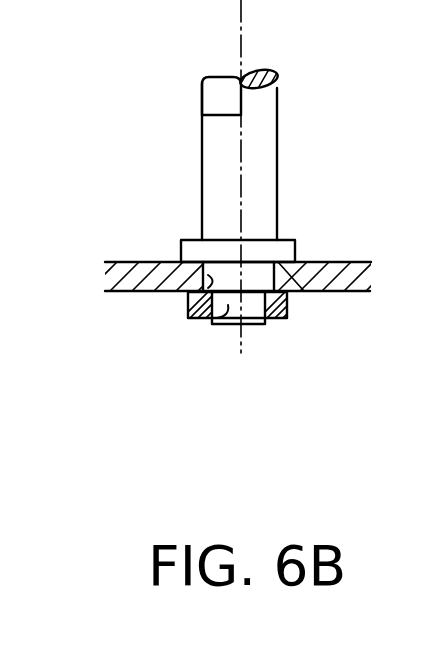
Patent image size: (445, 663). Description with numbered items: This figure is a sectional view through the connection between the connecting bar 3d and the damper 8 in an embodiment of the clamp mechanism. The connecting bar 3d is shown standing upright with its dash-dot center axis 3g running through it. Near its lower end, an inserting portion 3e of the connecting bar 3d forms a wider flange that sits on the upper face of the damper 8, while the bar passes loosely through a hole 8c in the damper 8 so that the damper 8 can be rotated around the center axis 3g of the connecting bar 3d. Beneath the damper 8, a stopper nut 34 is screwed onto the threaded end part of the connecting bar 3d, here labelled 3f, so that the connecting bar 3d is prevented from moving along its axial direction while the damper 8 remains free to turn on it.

The connecting bar 3d is at (257, 147).
The inserting portion 3e is at (312, 262).
The threaded end portion of pivot pin 3f is at (228, 324).
The center axis 3g is at (202, 109).
The damper 8 is at (148, 262).
The hole 8c is at (188, 298).
The stopper nut 34 is at (287, 308).